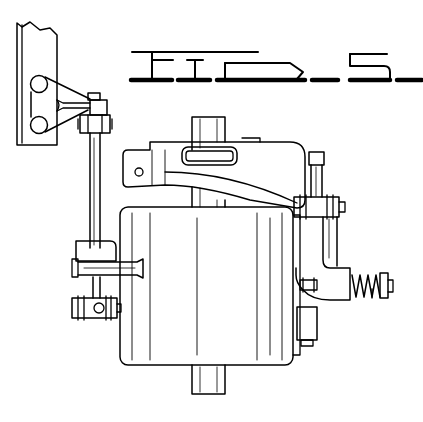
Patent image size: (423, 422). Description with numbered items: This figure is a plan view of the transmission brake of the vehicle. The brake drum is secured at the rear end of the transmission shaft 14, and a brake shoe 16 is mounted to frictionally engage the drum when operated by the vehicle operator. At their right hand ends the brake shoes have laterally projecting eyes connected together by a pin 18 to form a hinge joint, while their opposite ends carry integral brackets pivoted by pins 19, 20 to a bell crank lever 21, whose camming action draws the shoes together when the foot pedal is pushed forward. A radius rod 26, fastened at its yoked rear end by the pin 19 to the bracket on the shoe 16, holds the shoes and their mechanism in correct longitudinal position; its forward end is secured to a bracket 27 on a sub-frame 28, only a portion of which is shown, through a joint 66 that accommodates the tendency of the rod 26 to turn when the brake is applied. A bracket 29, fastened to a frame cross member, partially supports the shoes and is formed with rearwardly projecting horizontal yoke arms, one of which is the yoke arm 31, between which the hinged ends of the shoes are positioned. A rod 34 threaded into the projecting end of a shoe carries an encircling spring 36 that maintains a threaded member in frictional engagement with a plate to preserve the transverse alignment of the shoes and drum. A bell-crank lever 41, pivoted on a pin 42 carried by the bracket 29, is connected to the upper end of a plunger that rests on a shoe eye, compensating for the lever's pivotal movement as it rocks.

The transmission shaft 14 is at (192, 390).
The brake shoe 16 is at (210, 286).
The pin 18 is at (303, 345).
The pin 19 is at (72, 268).
The pin 20 is at (73, 305).
The bell crank lever 21 is at (92, 287).
The radius rod 26 is at (93, 190).
The bracket 27 is at (58, 90).
The sub-frame 28 is at (57, 48).
The bracket 29 is at (273, 150).
The yoke arm 31 is at (331, 233).
The rod 34 is at (390, 287).
The spring 36 is at (377, 292).
The bell-crank lever 41 is at (318, 183).
The pin 42 is at (341, 206).
The joint 66 is at (104, 118).